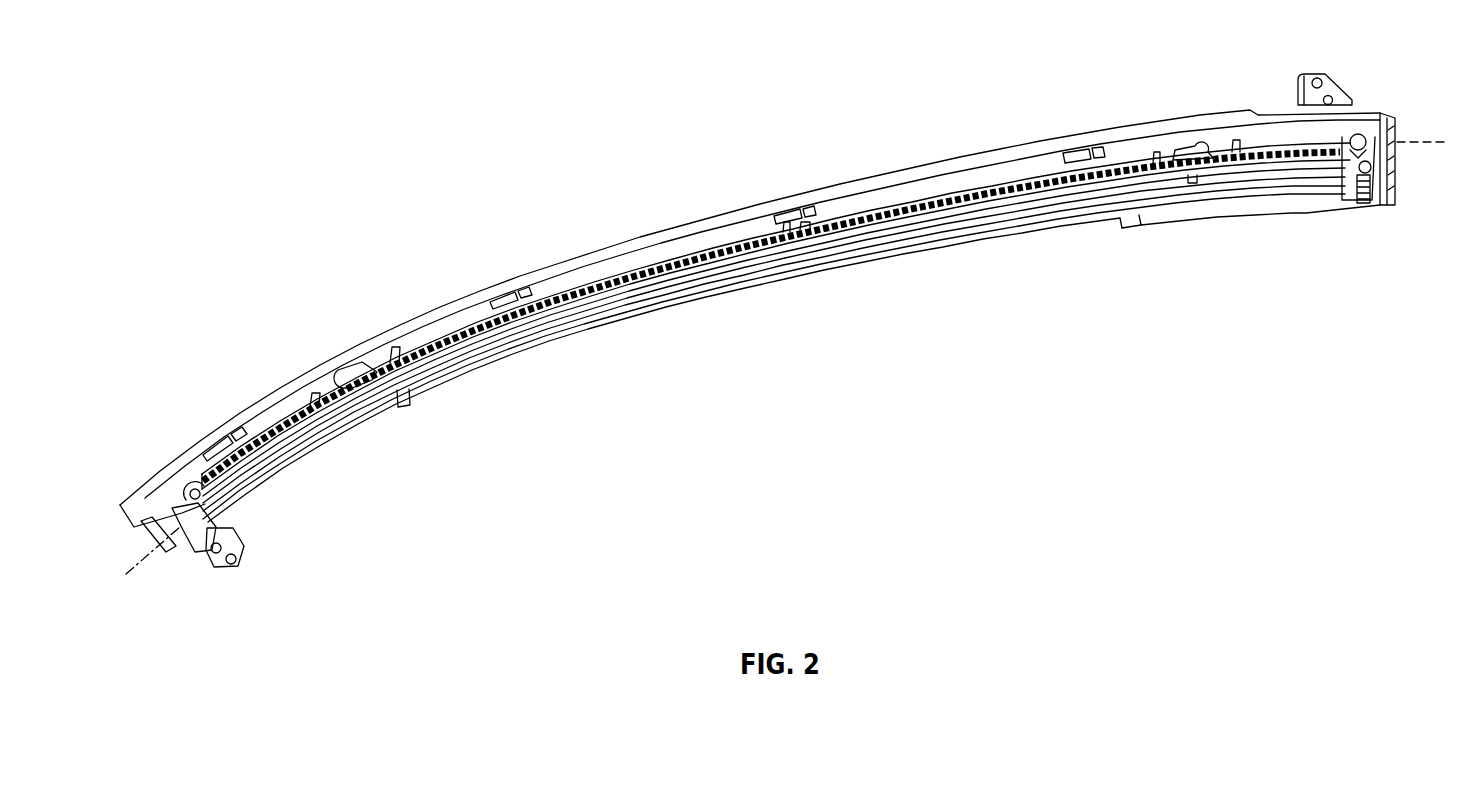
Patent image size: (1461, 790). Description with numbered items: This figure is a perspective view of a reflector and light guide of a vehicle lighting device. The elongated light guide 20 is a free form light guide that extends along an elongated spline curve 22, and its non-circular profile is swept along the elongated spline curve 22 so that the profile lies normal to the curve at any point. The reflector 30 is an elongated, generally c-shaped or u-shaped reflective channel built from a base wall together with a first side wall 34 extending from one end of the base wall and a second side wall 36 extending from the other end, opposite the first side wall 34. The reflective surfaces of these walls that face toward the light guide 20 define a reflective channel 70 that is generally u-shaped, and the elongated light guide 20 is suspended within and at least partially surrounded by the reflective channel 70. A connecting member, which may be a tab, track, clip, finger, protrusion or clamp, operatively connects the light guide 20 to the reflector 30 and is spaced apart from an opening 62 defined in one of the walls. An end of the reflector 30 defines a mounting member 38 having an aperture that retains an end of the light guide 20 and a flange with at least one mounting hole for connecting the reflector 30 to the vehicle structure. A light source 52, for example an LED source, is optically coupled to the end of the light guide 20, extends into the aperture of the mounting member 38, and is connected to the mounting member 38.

The elongated light guide 20 is at (776, 314).
The elongated spline curve 22 is at (1417, 143).
The reflector 30 is at (966, 147).
The first side wall 34 is at (456, 320).
The second side wall 36 is at (436, 378).
The mounting member 38 is at (200, 566).
The light source 52 is at (192, 486).
The opening 62 is at (338, 378).
The reflective channel 70 is at (580, 272).